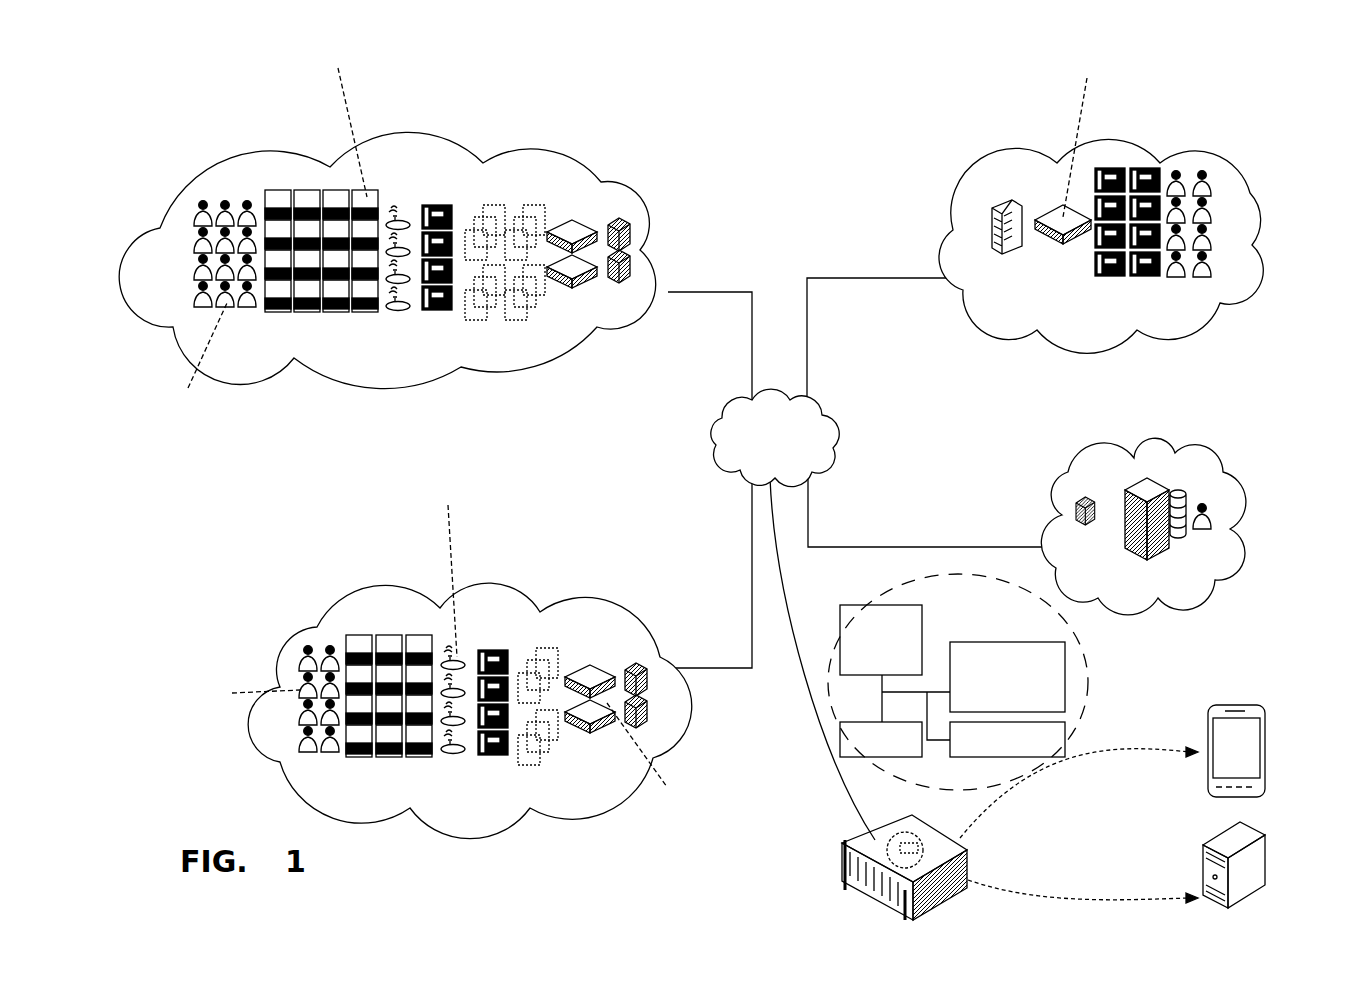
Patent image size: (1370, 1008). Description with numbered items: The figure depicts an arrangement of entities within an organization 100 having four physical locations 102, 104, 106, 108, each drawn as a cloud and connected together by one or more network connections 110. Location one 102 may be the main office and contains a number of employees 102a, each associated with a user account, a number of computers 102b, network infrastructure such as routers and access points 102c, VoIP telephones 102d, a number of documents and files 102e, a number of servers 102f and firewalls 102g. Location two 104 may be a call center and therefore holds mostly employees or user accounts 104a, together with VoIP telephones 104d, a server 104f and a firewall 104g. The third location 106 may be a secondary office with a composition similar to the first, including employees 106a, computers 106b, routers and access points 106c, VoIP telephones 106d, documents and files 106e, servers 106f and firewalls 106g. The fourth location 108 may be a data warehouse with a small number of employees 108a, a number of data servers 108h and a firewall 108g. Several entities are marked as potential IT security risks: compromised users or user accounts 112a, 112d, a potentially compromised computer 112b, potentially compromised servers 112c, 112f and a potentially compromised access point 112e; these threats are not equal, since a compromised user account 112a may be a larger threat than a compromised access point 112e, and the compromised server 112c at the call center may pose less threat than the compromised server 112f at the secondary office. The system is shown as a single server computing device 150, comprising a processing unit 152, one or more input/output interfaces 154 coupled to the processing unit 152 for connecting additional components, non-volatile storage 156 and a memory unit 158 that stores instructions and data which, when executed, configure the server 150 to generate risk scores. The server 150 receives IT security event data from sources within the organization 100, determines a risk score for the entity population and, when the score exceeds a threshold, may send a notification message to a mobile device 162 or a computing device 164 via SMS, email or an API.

The organization 100 is at (776, 29).
The location 1 102 is at (642, 190).
The employees 102a is at (240, 195).
The computers 102b is at (307, 185).
The routers and access points 102c is at (393, 200).
The VoIP telephones 102d is at (435, 200).
The documents and files 102e is at (515, 195).
The servers 102f is at (573, 215).
The firewalls 102g is at (615, 215).
The location 2 104 is at (942, 250).
The employees or user accounts 104a is at (1195, 170).
The VoIP telephones 104d is at (1128, 165).
The server 104f is at (1058, 200).
The firewall 104g is at (1000, 195).
The third location 106 is at (687, 700).
The employees 106a is at (320, 645).
The computers 106b is at (385, 628).
The routers and access points 106c is at (448, 645).
The VoIP telephones 106d is at (490, 645).
The documents and files 106e is at (560, 655).
The servers 106f is at (592, 658).
The firewalls 106g is at (637, 660).
The fourth location 108 is at (1232, 594).
The employees 108a is at (1205, 490).
The firewall 108g is at (1090, 490).
The data servers 108h is at (1152, 460).
The network connections 110 is at (791, 450).
The compromised user account 112a is at (142, 464).
The potentially compromised computer 112b is at (272, 32).
The potentially compromised server 112c is at (1030, 38).
The compromised user account 112d is at (140, 708).
The potentially compromised access point 112e is at (382, 470).
The potentially compromised server 112f is at (662, 820).
The server computing device 150 is at (968, 862).
The processing unit 152 is at (885, 606).
The input/output interface 154 is at (895, 758).
The non-volatile storage 156 is at (1066, 740).
The memory unit 158 is at (1065, 672).
The mobile device 162 is at (1266, 752).
The computing device 164 is at (1266, 852).